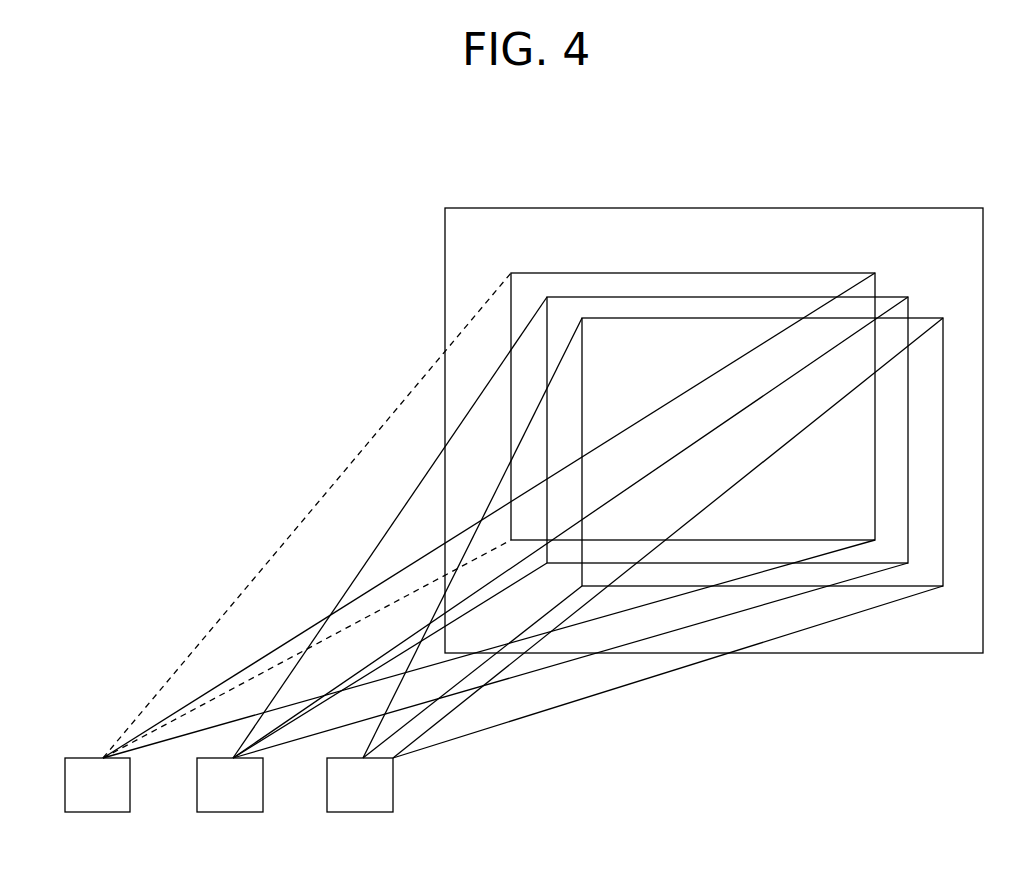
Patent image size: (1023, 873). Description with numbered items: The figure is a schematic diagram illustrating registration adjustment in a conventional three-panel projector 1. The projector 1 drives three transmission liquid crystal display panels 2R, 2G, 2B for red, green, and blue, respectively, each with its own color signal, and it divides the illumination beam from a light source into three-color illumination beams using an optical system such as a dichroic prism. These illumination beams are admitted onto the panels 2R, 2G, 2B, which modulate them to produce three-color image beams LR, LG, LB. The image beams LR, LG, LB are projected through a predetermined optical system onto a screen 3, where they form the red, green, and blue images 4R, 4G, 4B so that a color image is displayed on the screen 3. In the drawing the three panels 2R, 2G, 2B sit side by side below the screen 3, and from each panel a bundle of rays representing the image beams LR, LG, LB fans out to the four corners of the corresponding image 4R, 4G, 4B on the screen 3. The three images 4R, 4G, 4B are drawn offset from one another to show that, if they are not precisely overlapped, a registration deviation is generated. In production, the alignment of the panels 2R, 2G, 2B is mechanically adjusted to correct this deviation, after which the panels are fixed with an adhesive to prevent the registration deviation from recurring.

The three-panel projector 1 is at (148, 260).
The screen 3 is at (718, 207).
The red image 4R is at (613, 273).
The green image 4G is at (703, 297).
The blue image 4B is at (783, 318).
The transmission liquid crystal display panel for red 2R is at (100, 812).
The transmission liquid crystal display panel for green 2G is at (232, 812).
The transmission liquid crystal display panel for blue 2B is at (363, 812).
The red image beam LR is at (363, 452).
The green image beam LG is at (426, 475).
The blue image beam LB is at (485, 516).